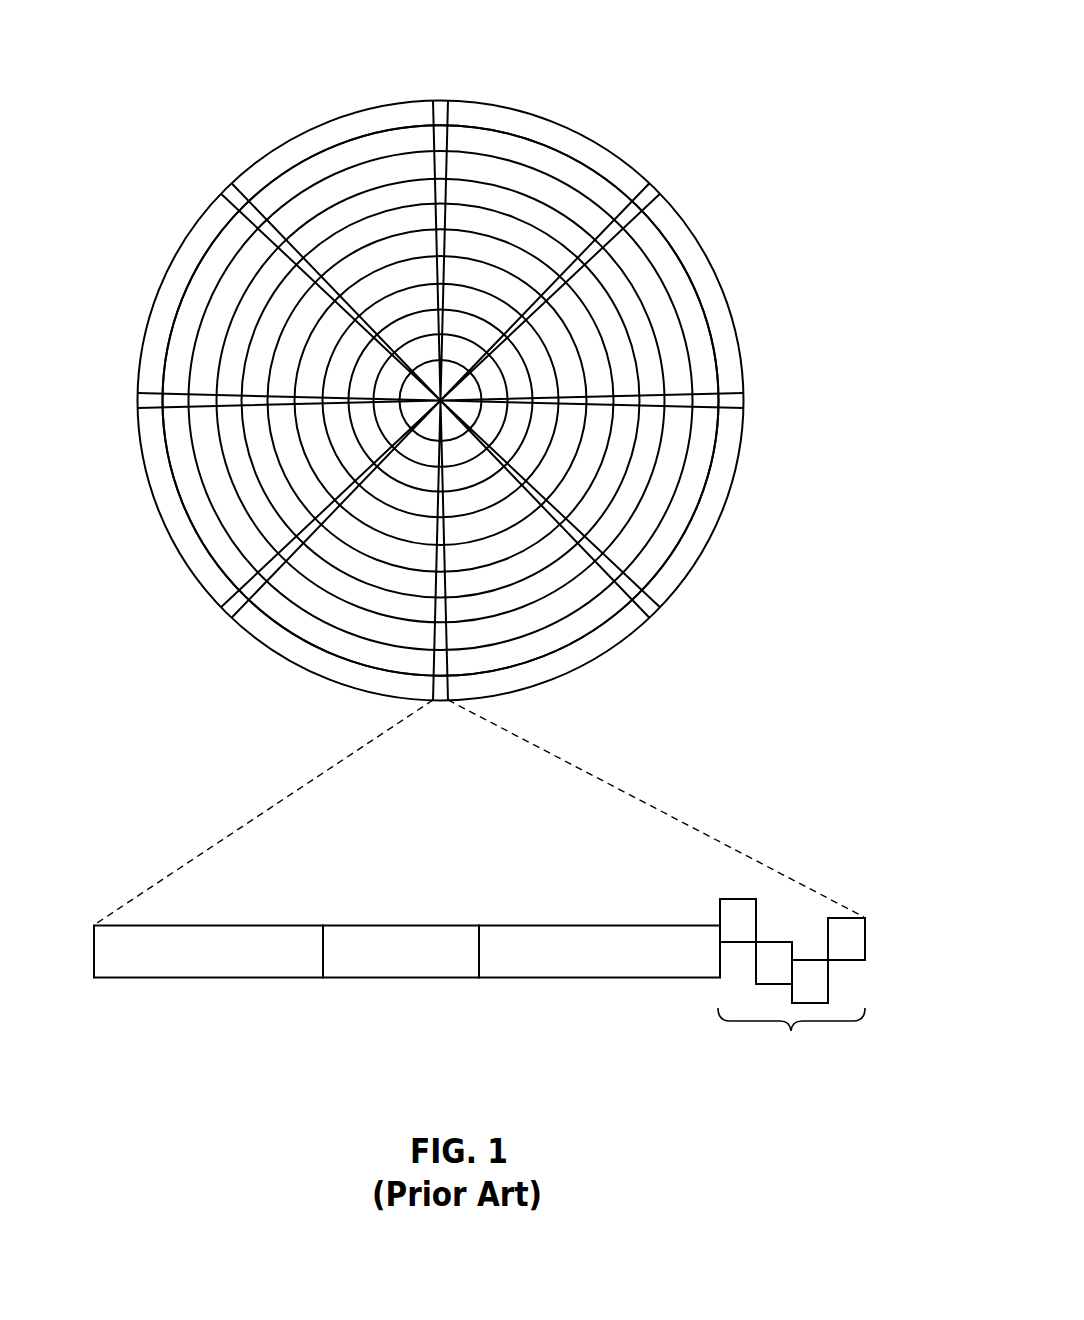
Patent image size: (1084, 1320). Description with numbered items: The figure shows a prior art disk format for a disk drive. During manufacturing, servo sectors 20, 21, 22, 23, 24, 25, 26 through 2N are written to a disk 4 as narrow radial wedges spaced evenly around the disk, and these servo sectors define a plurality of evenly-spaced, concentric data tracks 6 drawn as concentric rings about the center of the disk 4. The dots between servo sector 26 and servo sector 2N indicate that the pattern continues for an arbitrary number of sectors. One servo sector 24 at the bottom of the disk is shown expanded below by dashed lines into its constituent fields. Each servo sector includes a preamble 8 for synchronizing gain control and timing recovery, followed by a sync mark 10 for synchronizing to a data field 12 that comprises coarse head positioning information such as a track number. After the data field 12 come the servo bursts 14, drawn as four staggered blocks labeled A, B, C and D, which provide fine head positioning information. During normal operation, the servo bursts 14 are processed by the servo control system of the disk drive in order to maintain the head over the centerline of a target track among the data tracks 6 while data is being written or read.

The disk 4 is at (245, 74).
The data tracks 6 is at (516, 150).
The servo sector 20 is at (440, 103).
The servo sector 21 is at (653, 190).
The servo sector 22 is at (740, 400).
The servo sector 23 is at (655, 608).
The servo sector 24 is at (298, 778).
The servo sector 25 is at (225, 608).
The servo sector 26 is at (146, 403).
The servo sector 2N is at (225, 195).
The preamble 8 is at (190, 978).
The sync mark 10 is at (392, 978).
The data field 12 is at (600, 978).
The servo bursts 14 is at (725, 885).